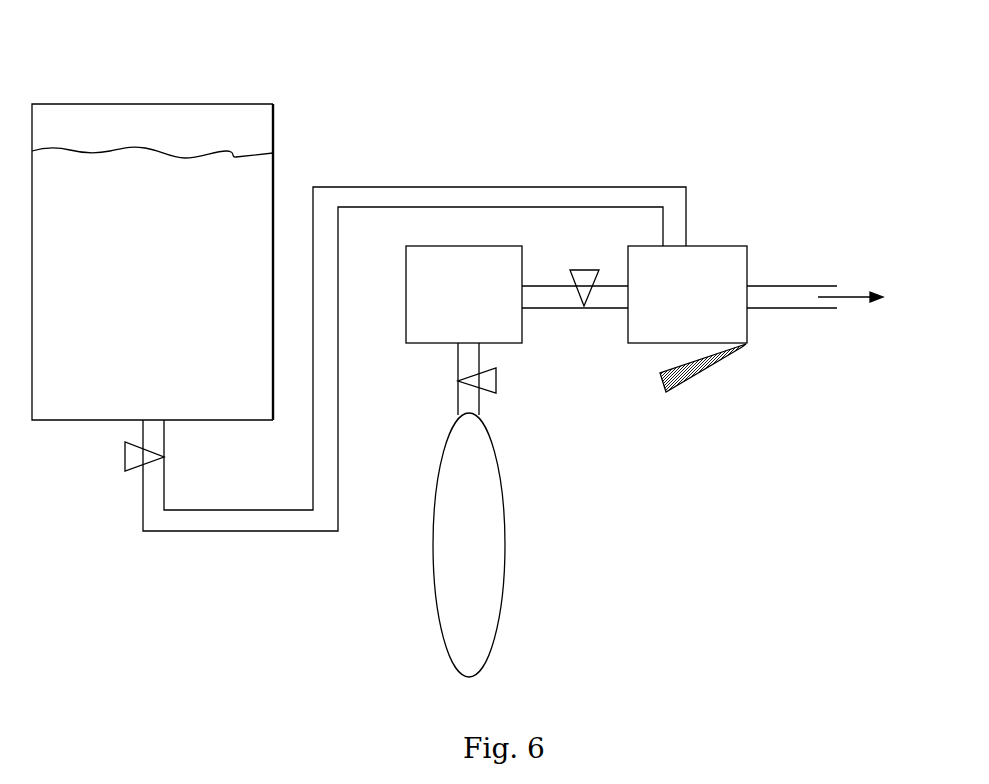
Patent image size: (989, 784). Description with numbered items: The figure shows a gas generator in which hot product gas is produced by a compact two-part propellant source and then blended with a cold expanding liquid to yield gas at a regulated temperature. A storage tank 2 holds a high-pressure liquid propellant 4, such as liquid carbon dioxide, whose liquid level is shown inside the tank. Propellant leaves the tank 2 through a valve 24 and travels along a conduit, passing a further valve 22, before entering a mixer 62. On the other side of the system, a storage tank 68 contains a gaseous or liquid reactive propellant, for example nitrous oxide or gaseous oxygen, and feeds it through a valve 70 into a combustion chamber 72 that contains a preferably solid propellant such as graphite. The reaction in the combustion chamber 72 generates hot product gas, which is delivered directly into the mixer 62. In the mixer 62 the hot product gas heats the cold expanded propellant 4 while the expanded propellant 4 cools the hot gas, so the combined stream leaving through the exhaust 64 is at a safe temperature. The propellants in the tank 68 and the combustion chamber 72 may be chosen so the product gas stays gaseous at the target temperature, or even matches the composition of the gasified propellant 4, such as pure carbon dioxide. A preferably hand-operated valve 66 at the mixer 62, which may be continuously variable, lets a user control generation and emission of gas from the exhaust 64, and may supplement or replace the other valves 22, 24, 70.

The storage tank 2 is at (218, 103).
The high-pressure liquid propellant 4 is at (248, 208).
The valve 22 is at (586, 269).
The valve 24 is at (125, 463).
The mixer 62 is at (687, 294).
The exhaust 64 is at (787, 308).
The hand-operated valve 66 is at (703, 373).
The storage tank 68 is at (469, 545).
The valve 70 is at (495, 392).
The combustion chamber 72 is at (464, 294).